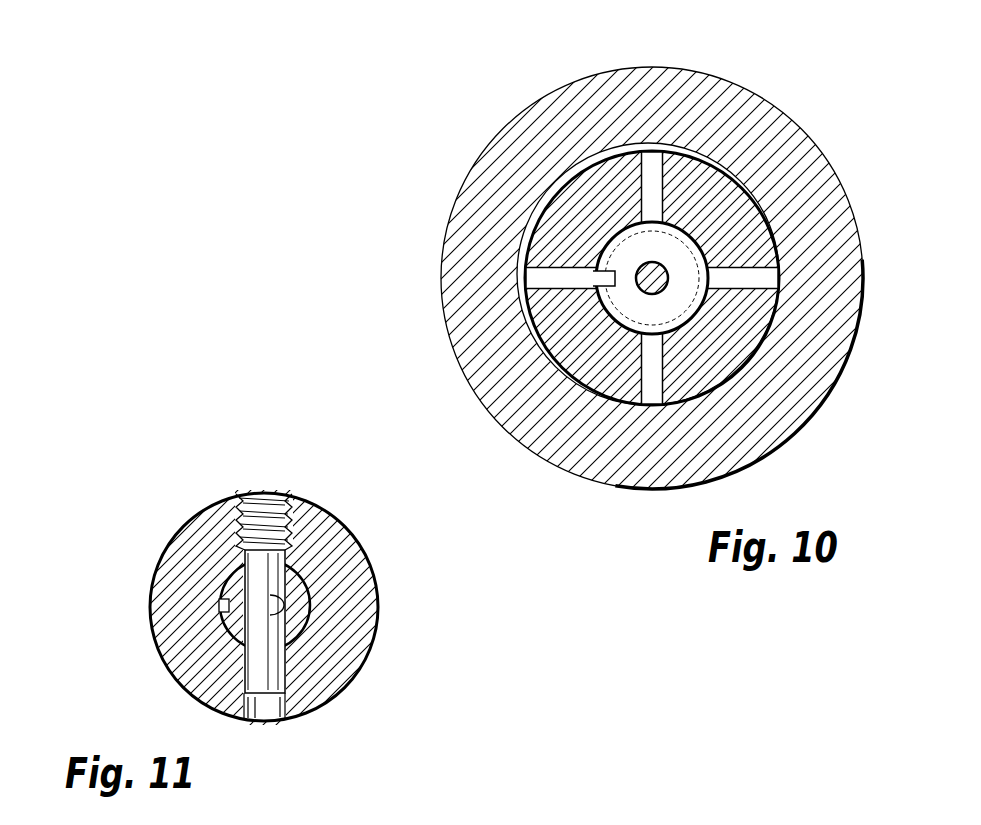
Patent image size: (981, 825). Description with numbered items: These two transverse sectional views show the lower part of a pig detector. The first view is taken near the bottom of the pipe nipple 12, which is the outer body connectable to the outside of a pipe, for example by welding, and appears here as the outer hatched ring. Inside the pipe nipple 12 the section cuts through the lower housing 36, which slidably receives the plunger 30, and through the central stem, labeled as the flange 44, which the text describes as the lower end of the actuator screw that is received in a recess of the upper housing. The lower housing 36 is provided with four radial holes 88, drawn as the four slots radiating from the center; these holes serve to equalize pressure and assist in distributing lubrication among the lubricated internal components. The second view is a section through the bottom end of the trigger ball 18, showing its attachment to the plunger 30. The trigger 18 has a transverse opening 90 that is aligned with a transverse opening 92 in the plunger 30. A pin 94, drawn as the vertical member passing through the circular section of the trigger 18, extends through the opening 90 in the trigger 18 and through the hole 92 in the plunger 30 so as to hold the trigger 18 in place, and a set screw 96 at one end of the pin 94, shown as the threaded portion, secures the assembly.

In FIG. 10, the pipe nipple 12 is at (733, 117).
In FIG. 11, the trigger ball 18 is at (192, 537).
In FIG. 10, the plunger 30 is at (642, 248).
In FIG. 11, the plunger 30 is at (293, 577).
In FIG. 10, the lower housing 36 is at (573, 175).
In FIG. 10, the flange 44 is at (640, 283).
In FIG. 11, the flange 44 is at (224, 605).
In FIG. 10, the radial holes 88 is at (652, 173).
In FIG. 11, the transverse opening 90 is at (280, 710).
In FIG. 11, the transverse opening 92 is at (273, 598).
In FIG. 11, the pin 94 is at (258, 660).
In FIG. 11, the set screw 96 is at (268, 515).